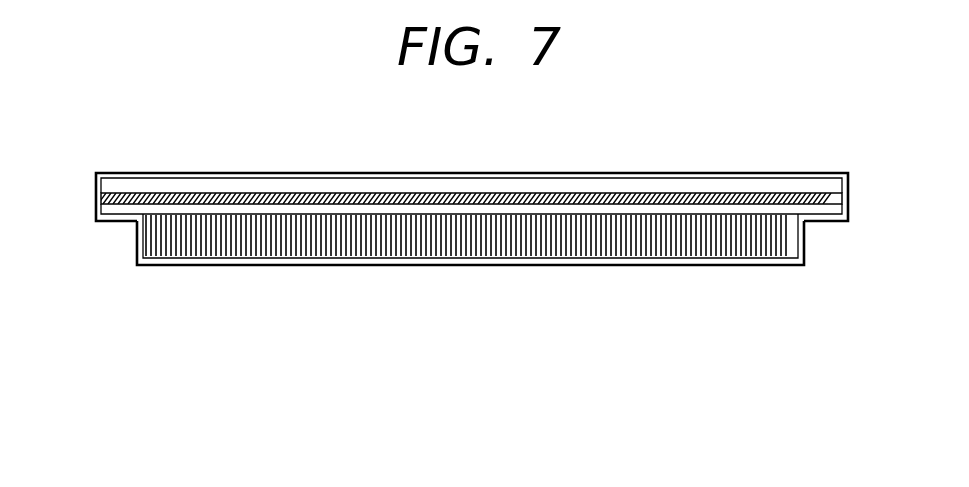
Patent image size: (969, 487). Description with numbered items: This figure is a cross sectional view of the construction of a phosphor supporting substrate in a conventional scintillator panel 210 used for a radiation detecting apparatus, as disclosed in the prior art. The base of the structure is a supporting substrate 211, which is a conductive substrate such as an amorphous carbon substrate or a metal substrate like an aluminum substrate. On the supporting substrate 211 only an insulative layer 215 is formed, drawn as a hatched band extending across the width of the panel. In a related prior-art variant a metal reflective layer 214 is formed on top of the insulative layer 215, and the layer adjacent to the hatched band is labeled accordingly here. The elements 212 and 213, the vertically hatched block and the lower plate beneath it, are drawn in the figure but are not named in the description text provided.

The scintillator panel 210 is at (857, 166).
The supporting substrate 211 is at (262, 187).
The heating element array 212 is at (173, 237).
The base plate 213 is at (632, 260).
The metal reflective layer 214 is at (500, 210).
The insulative layer 215 is at (412, 198).